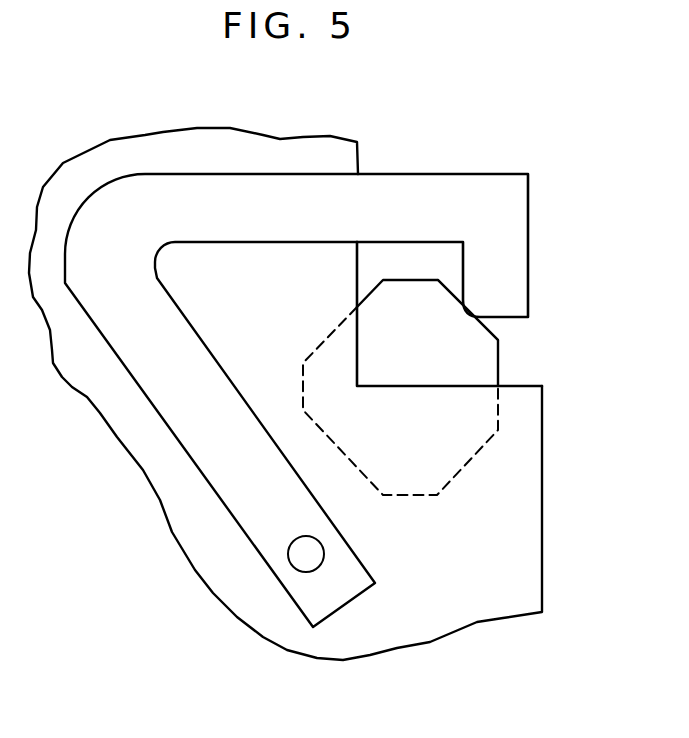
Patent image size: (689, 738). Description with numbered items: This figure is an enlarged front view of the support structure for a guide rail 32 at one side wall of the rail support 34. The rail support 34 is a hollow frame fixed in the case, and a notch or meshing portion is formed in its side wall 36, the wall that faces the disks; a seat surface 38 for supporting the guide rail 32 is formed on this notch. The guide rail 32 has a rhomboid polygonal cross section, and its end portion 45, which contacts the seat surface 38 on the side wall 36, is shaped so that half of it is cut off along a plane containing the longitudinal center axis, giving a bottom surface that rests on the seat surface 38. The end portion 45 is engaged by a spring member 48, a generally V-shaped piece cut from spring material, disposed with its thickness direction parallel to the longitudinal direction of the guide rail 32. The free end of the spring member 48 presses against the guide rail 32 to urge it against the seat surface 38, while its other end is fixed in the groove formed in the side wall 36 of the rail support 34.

The guide rail 32 is at (500, 372).
The rail support 34 is at (360, 160).
The side wall 36 is at (528, 504).
The seat surface 38 is at (403, 386).
The end portion 45 is at (488, 346).
The spring member 48 is at (162, 193).